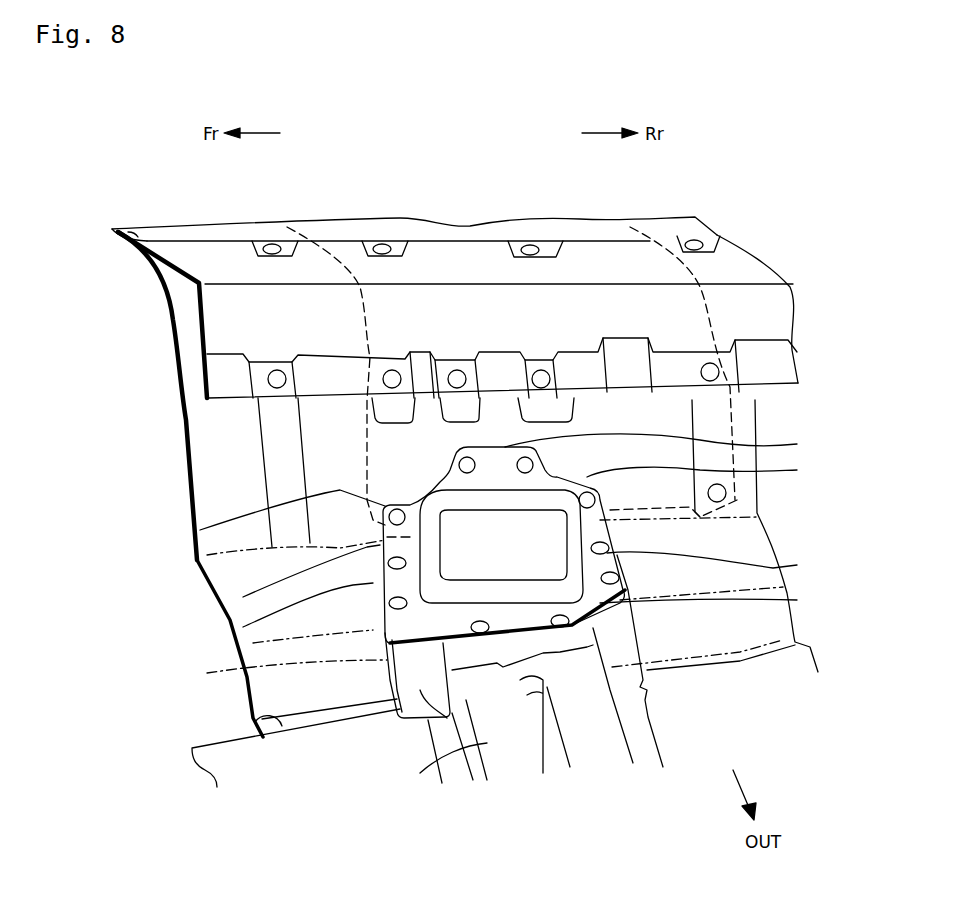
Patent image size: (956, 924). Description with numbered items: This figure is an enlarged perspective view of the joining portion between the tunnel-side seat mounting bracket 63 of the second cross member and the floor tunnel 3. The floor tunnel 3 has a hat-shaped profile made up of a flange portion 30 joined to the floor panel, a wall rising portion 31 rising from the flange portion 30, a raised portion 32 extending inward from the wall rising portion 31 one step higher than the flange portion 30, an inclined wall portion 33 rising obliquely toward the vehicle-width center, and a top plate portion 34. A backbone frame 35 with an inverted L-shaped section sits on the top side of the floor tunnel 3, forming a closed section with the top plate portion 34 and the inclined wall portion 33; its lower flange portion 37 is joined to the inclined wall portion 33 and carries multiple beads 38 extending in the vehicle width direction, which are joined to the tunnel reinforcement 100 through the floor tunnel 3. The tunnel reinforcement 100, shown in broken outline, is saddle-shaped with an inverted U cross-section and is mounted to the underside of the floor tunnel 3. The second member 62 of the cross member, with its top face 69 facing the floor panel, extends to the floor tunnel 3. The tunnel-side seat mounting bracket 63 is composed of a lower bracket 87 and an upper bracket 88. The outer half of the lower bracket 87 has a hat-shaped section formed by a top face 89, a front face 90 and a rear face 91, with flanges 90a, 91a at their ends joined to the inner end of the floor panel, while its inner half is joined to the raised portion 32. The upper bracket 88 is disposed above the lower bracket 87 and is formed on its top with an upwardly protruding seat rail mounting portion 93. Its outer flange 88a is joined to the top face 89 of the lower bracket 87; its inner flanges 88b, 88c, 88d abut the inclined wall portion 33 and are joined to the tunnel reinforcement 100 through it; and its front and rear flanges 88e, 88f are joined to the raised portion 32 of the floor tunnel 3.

The floor tunnel 3 is at (182, 415).
The flange portion 30 is at (247, 718).
The wall rising portion 31 is at (263, 692).
The raised portion 32 is at (223, 577).
The inclined wall portion 33 is at (207, 460).
The top plate portion 34 is at (125, 243).
The backbone frame 35 is at (590, 250).
The lower flange portion 37 is at (217, 378).
The beads 38 is at (531, 362).
The second member 62 is at (433, 768).
The tunnel-side seat mounting bracket 63 is at (180, 686).
The top face 69 is at (613, 750).
The lower bracket 87 is at (283, 671).
The upper bracket 88 is at (253, 622).
The flange 88a is at (716, 597).
The flange 88b is at (668, 443).
The flange 88c is at (200, 530).
The flange 88d is at (709, 470).
The flange 88e is at (243, 597).
The flange 88f is at (718, 562).
The top face 89 is at (590, 630).
The front face 90 is at (423, 717).
The flange 90a is at (440, 708).
The rear face 91 is at (593, 641).
The flange 91a is at (647, 685).
The seat rail mounting portion 93 is at (533, 543).
The tunnel reinforcement 100 is at (720, 255).